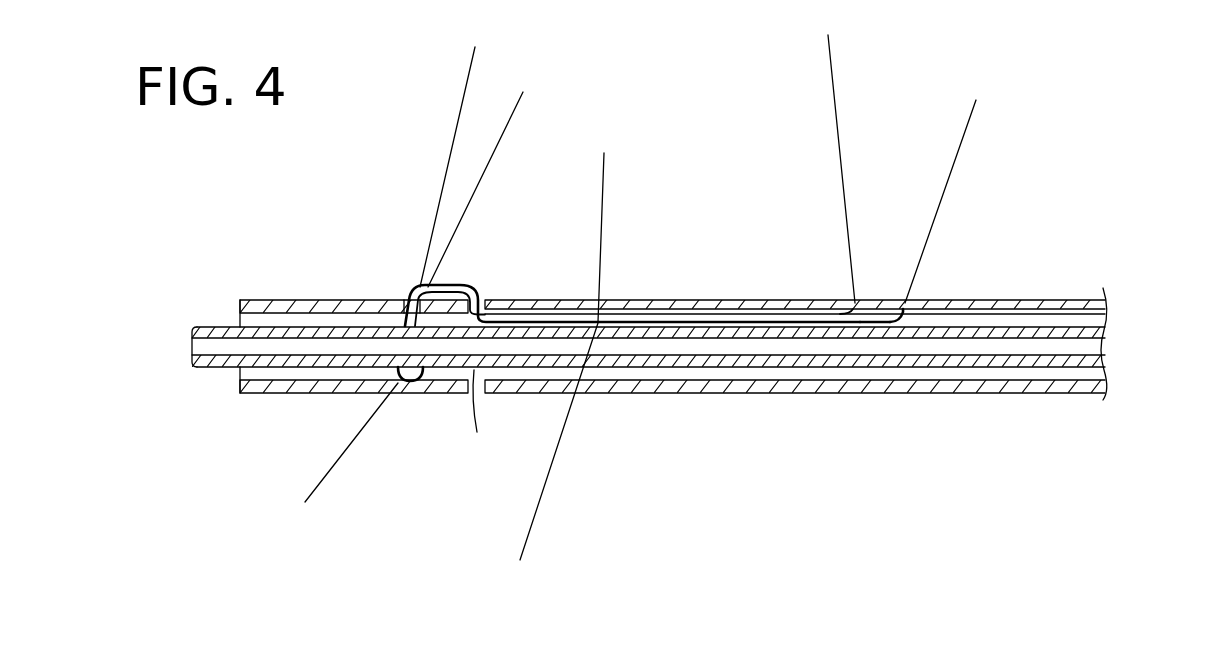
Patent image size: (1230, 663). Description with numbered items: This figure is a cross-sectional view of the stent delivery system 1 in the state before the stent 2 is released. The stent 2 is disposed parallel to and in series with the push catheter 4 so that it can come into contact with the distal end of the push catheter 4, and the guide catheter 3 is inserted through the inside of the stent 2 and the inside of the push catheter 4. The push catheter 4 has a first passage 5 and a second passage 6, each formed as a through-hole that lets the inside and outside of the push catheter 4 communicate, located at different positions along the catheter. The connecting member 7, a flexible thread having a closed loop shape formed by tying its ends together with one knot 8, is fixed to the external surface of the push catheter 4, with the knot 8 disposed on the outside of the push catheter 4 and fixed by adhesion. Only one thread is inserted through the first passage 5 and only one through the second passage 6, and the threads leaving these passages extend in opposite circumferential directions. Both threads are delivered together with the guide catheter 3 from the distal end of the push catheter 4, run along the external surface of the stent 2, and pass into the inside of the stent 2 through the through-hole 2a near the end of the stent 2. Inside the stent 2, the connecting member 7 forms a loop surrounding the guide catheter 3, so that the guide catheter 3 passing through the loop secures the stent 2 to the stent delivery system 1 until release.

The stent delivery system 1 is at (1146, 219).
The stent 2 is at (345, 300).
The through-hole 2a is at (413, 300).
The guide catheter 3 is at (225, 332).
The push catheter 4 is at (681, 302).
The first passage 5 is at (852, 305).
The second passage 6 is at (898, 303).
The connecting member 7 is at (874, 322).
The knot 8 is at (877, 394).